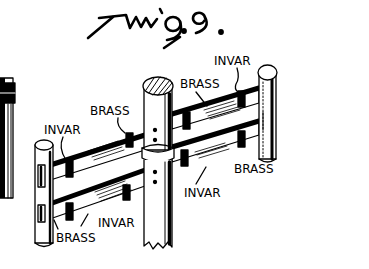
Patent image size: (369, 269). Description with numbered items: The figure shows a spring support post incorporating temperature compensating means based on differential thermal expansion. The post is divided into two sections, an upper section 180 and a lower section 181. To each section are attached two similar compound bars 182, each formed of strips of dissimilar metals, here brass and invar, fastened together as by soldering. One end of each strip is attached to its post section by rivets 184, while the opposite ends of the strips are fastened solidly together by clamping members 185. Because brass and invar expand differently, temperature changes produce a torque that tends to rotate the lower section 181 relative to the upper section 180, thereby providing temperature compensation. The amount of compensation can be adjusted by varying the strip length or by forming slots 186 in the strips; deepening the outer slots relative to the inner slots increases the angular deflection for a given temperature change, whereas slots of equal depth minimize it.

The upper section 180 is at (153, 71).
The lower section 181 is at (149, 243).
The compound bars 182 is at (262, 78).
The rivets 184 is at (170, 196).
The clamping members 185 is at (276, 122).
The slots 186 is at (35, 243).